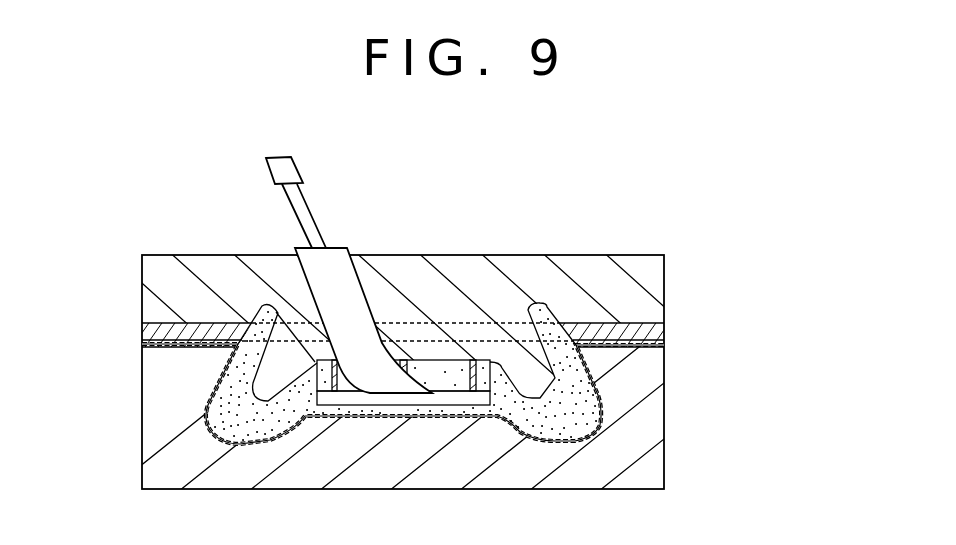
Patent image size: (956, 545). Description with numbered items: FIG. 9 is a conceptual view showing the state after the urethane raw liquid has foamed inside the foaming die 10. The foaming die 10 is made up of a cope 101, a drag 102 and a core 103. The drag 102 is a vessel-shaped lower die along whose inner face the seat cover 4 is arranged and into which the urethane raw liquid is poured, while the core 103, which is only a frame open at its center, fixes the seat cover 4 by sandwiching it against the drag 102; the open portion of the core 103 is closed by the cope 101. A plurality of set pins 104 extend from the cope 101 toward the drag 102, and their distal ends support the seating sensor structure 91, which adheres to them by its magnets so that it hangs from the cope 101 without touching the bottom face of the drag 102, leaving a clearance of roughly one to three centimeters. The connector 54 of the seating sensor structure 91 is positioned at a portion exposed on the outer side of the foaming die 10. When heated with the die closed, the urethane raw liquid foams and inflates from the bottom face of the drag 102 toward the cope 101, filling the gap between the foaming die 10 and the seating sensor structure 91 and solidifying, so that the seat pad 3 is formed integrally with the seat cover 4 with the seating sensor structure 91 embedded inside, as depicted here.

The foaming die 10 is at (798, 263).
The cope 101 is at (657, 288).
The drag 102 is at (648, 415).
The core 103 is at (660, 333).
The set pin 104 is at (312, 364).
The connector 54 is at (268, 169).
The seating sensor structure 91 is at (459, 397).
The seat pad 3 is at (250, 422).
The seat cover 4 is at (583, 437).